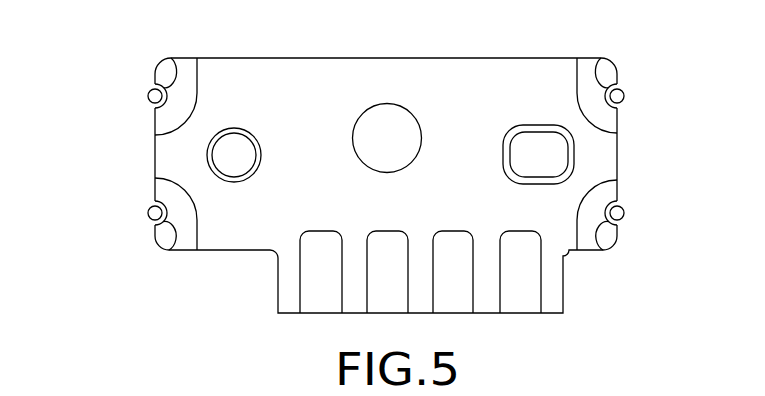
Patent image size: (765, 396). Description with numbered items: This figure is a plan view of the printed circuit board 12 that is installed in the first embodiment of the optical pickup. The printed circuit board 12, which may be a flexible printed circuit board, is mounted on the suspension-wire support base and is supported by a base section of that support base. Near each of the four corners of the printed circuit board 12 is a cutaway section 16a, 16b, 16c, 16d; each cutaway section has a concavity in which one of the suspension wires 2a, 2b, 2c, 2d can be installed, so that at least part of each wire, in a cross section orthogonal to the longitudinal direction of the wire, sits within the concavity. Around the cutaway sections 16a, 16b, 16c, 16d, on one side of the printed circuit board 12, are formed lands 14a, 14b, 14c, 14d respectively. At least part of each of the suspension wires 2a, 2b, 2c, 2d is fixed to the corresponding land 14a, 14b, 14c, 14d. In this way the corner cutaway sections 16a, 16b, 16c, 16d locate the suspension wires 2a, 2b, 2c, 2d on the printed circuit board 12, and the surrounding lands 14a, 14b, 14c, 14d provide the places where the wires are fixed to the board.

The printed circuit board 12 is at (303, 58).
The suspension wire 2a is at (148, 92).
The suspension wire 2b is at (624, 92).
The suspension wire 2c is at (625, 216).
The suspension wire 2d is at (148, 216).
The land 14a is at (160, 119).
The land 14b is at (608, 124).
The land 14c is at (610, 190).
The land 14d is at (163, 190).
The cutaway section 16a is at (171, 58).
The cutaway section 16b is at (601, 58).
The cutaway section 16c is at (604, 251).
The cutaway section 16d is at (170, 251).